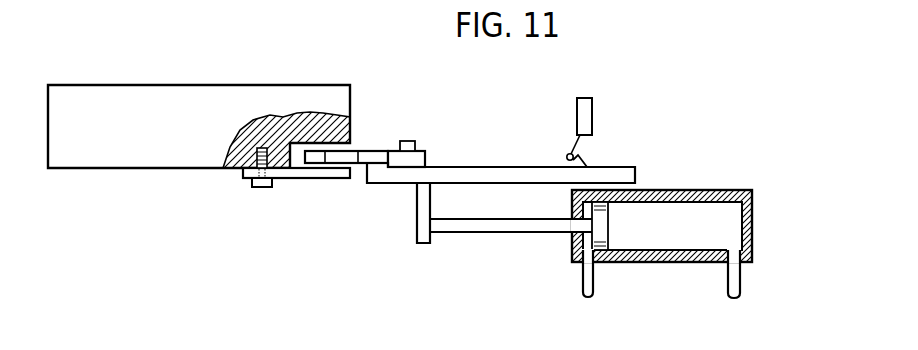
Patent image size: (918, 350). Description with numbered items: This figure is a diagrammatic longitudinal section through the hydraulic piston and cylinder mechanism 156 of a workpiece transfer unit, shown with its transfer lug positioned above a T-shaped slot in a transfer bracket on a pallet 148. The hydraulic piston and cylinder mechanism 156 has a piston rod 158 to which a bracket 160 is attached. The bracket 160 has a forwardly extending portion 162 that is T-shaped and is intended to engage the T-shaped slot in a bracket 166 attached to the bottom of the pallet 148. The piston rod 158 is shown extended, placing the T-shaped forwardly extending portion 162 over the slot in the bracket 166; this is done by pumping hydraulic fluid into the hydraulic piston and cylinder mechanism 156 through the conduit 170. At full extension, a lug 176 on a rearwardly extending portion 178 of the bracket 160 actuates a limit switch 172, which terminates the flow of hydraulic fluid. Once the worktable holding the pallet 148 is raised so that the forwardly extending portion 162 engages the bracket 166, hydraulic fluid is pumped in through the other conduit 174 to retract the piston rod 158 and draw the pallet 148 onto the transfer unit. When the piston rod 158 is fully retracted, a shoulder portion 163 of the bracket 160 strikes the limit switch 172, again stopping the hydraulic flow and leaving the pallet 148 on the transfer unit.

The pallet 148 is at (118, 150).
The bracket 166 is at (293, 173).
The forwardly extending portion 162 is at (372, 152).
The shoulder portion 163 is at (428, 162).
The bracket 160 is at (422, 209).
The rearwardly extending portion 178 is at (490, 173).
The piston rod 158 is at (495, 223).
The hydraulic piston and cylinder mechanism 156 is at (658, 252).
The conduit 174 is at (583, 280).
The conduit 170 is at (740, 280).
The limit switch 172 is at (583, 113).
The lug 176 is at (582, 158).